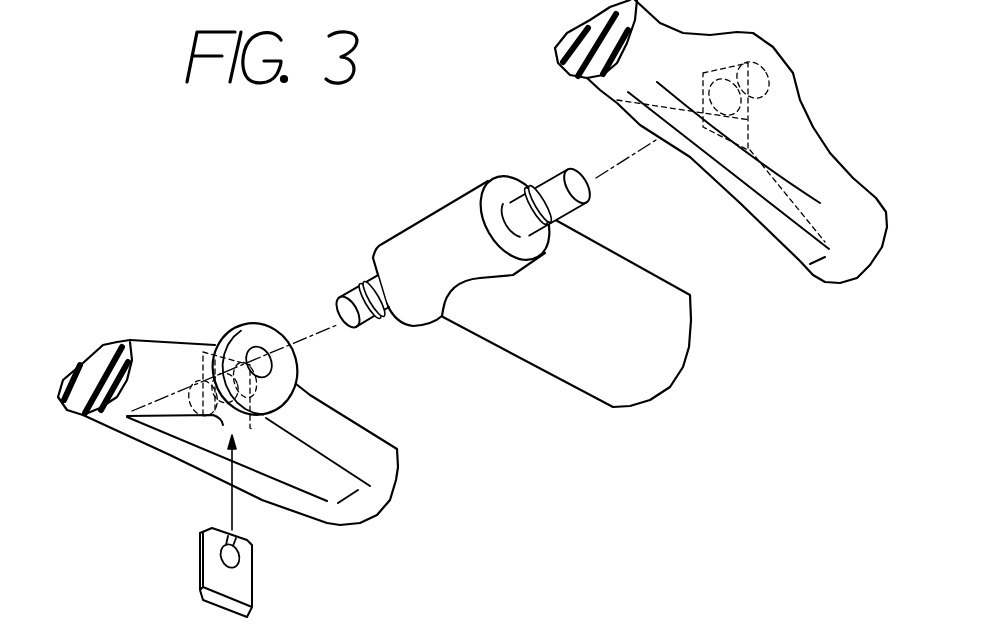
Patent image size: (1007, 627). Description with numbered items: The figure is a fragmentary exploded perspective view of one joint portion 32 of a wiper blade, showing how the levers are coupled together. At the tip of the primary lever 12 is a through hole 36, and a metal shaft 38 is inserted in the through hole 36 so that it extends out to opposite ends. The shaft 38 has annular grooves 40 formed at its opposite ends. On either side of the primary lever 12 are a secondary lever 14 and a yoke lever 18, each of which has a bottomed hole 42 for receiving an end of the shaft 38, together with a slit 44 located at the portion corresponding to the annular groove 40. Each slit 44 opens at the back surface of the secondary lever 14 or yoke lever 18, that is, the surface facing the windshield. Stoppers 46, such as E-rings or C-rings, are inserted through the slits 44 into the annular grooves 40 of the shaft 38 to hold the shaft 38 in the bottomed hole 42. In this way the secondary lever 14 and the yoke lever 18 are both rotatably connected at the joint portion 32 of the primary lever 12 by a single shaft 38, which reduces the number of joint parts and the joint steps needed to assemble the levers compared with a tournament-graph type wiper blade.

The primary lever 12 is at (570, 387).
The secondary lever 14 is at (168, 350).
The yoke lever 18 is at (823, 138).
The joint portion 32 is at (408, 202).
The through hole 36 is at (538, 262).
The shaft 38 is at (591, 198).
The annular groove 40 is at (538, 190).
The bottomed hole 42 is at (262, 347).
The slit 44 is at (223, 425).
The stopper 46 is at (253, 577).